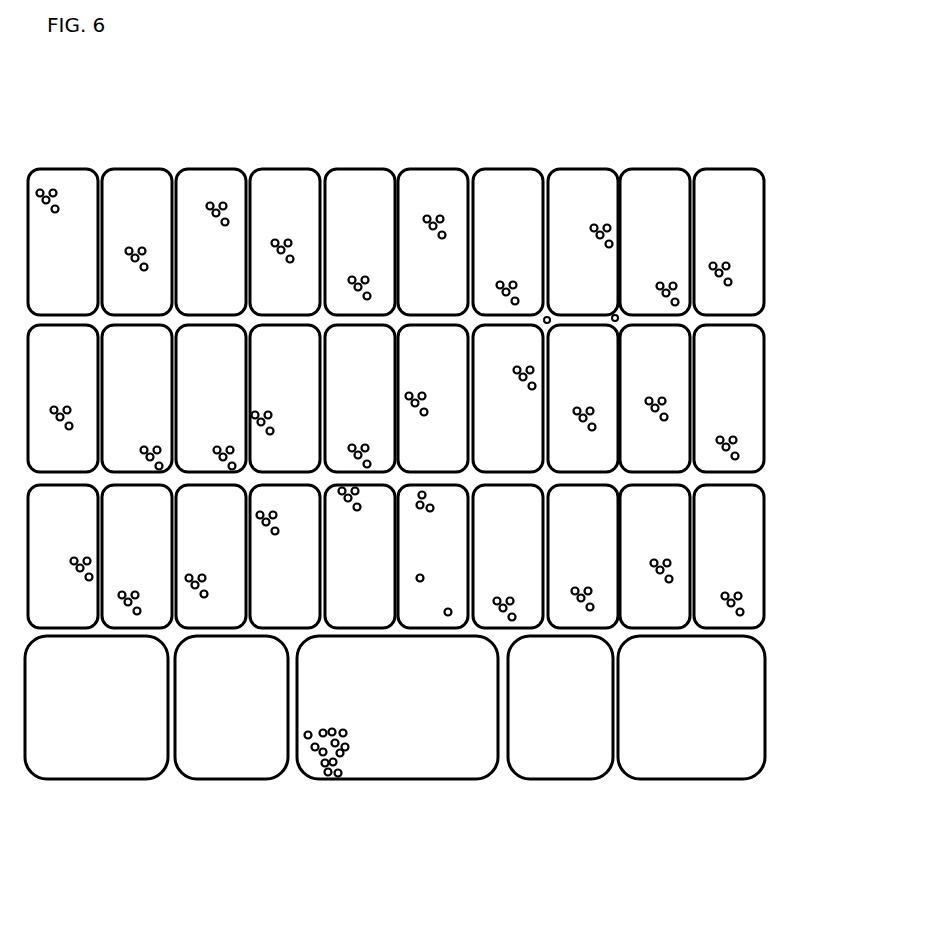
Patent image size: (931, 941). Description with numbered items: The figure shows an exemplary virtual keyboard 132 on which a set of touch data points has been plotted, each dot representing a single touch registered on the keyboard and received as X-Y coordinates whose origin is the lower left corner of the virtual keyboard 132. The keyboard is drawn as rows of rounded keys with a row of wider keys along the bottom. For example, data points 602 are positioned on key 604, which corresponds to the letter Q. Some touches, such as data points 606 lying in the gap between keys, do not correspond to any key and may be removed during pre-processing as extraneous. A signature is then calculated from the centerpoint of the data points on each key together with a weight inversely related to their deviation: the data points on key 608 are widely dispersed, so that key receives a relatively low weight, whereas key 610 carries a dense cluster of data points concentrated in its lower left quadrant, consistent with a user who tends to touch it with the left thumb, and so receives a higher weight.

The virtual keyboard 132 is at (640, 95).
The data points 602 is at (62, 197).
The key 604 is at (47, 167).
The data points 606 is at (613, 315).
The key 608 is at (425, 630).
The key 610 is at (340, 777).